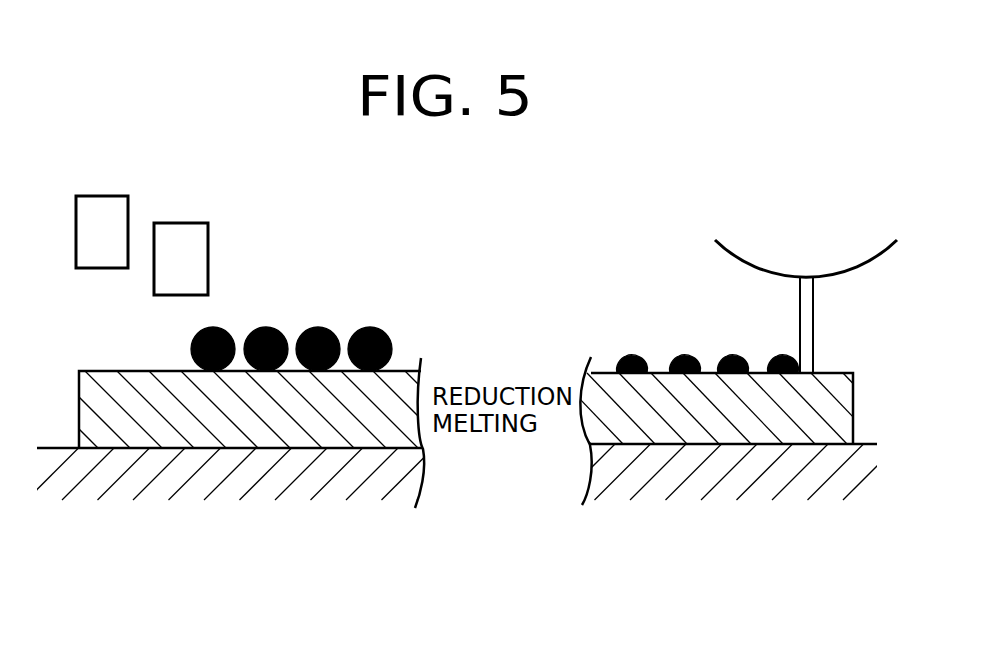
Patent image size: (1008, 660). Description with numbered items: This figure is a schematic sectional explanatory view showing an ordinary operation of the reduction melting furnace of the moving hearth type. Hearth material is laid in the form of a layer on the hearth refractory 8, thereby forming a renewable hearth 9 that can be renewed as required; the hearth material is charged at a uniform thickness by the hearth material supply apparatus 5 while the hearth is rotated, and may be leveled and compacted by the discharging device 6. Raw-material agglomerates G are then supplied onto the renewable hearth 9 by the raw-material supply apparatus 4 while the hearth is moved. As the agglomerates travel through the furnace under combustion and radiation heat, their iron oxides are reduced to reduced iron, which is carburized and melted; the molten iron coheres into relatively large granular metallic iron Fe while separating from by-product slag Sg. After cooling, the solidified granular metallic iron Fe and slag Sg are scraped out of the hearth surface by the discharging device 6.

The raw-material supply apparatus 4 is at (180, 232).
The hearth material supply apparatus 5 is at (97, 207).
The discharging device 6 is at (817, 252).
The hearth refractory 8 is at (60, 478).
The renewable hearth 9 is at (100, 407).
The raw-material agglomerates G is at (320, 332).
The granular metallic iron Fe is at (676, 360).
The by-product slag Sg is at (685, 356).